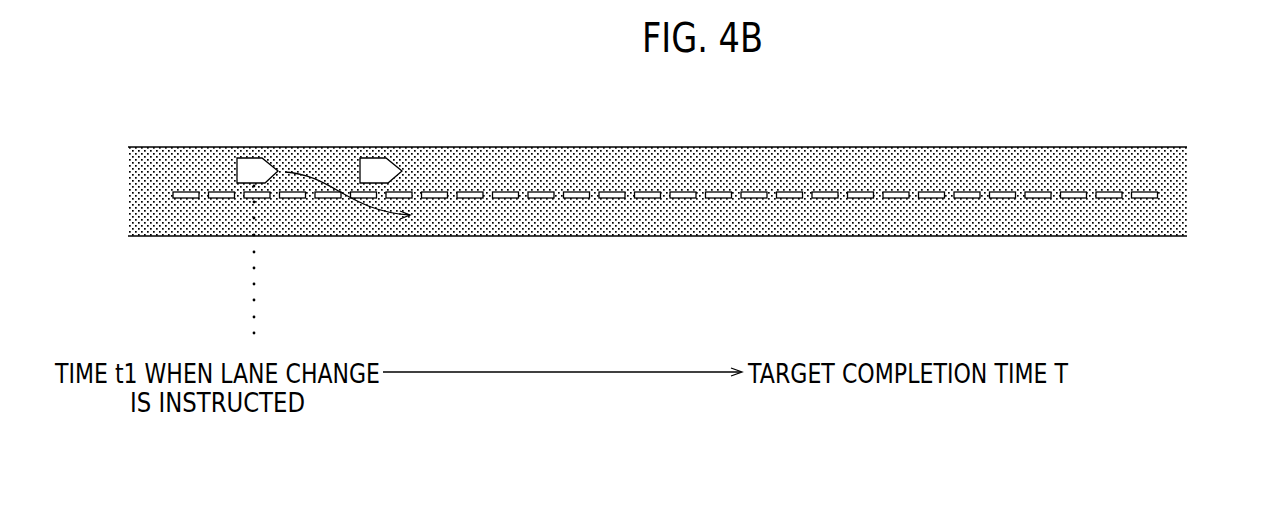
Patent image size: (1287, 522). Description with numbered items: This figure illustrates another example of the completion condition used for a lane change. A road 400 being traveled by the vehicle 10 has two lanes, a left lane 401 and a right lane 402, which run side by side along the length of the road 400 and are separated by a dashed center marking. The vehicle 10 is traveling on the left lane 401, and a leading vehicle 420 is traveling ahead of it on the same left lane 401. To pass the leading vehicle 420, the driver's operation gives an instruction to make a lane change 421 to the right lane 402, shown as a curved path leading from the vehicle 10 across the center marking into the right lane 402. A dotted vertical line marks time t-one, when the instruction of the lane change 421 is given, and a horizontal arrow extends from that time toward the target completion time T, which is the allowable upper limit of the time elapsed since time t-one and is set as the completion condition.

The vehicle 10 is at (236, 157).
The leading vehicle 420 is at (376, 167).
The lane change 421 is at (364, 209).
The road 400 is at (1195, 147).
The left lane 401 is at (911, 163).
The right lane 402 is at (982, 222).